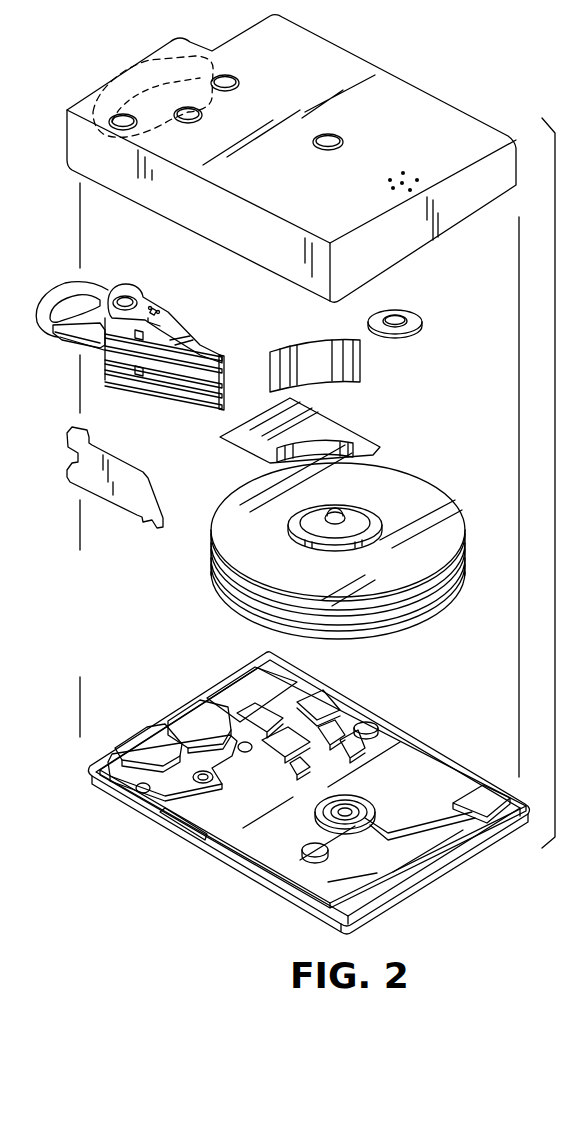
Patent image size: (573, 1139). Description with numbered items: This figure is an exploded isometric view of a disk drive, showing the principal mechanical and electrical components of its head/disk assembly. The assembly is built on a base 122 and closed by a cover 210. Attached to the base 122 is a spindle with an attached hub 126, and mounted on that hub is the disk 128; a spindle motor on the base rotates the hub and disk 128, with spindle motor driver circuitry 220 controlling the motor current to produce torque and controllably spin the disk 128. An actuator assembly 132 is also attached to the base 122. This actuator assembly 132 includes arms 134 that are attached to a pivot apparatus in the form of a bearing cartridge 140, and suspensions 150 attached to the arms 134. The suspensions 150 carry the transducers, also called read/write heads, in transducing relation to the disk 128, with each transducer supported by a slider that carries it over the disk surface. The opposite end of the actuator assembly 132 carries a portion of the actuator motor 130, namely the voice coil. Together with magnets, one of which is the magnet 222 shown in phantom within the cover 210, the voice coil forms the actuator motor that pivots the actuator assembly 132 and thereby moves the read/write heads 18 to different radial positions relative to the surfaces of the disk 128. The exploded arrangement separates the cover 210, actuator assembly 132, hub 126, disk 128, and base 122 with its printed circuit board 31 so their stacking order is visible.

The cover 210 is at (291, 159).
The magnet 222 is at (155, 65).
The bearing cartridge 140 is at (127, 305).
The arms 134 is at (163, 288).
The actuator motor 130 is at (68, 293).
The suspensions 150 is at (200, 342).
The read/write heads 18 is at (222, 358).
The actuator assembly 132 is at (110, 380).
The spindle with an attached hub 126 is at (343, 512).
The disk 128 is at (359, 534).
The base 122 is at (405, 762).
The printed circuit board 31 is at (348, 690).
The spindle motor driver circuitry 220 is at (140, 723).